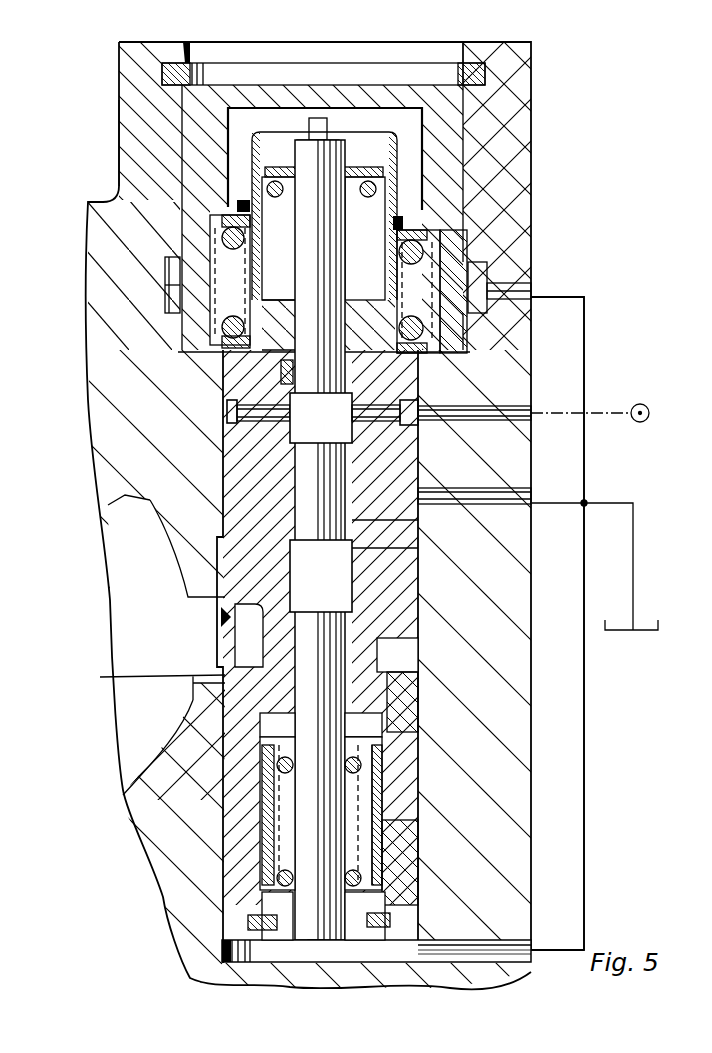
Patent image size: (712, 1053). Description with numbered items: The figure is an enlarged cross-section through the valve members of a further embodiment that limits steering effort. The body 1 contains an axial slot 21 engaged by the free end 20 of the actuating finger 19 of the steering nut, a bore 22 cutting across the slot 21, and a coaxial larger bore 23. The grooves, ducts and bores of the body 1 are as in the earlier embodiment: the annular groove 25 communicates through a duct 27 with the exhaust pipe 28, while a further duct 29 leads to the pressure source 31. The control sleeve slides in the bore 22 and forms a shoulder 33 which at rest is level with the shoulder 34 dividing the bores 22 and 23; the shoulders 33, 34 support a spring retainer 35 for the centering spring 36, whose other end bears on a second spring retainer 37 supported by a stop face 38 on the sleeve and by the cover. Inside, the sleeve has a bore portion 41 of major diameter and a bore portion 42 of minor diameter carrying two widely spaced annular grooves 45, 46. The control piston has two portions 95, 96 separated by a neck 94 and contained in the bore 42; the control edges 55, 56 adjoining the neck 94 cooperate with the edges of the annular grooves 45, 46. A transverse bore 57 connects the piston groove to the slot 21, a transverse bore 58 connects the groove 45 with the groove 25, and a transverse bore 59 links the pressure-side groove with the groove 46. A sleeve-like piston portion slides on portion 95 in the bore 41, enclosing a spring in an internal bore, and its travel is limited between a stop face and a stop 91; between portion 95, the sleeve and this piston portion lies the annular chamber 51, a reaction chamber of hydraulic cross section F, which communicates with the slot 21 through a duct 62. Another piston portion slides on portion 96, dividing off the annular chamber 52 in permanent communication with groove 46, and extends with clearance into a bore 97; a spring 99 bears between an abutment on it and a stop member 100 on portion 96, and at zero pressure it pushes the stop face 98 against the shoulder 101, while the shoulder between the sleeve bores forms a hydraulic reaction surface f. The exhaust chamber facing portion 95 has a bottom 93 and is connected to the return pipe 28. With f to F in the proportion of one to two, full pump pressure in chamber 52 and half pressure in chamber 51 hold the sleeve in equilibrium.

The body 1 is at (193, 913).
The actuating finger 19 is at (162, 647).
The free end 20 is at (225, 642).
The axial slot 21 is at (193, 683).
The bore 22 is at (222, 838).
The larger bore 23 is at (525, 72).
The annular groove 25 is at (240, 495).
The duct 27 is at (490, 500).
The exhaust pipe 28 is at (633, 503).
The duct 29 is at (483, 412).
The pressure source 31 is at (638, 403).
The shoulder 33 is at (262, 372).
The shoulder 34 is at (172, 318).
The spring retainer 35 is at (168, 258).
The centering spring 36 is at (232, 213).
The spring retainer 37 is at (122, 46).
The stop face 38 is at (184, 48).
The bore portion of major diameter 41 is at (385, 871).
The bore portion of minor diameter 42 is at (395, 632).
The annular groove 45 is at (222, 596).
The annular groove 46 is at (295, 437).
The annular chamber 51 is at (380, 742).
The annular chamber 52 is at (450, 272).
The control edge 55 is at (321, 576).
The control edge 56 is at (321, 418).
The transverse bore 57 is at (245, 537).
The transverse bore 58 is at (405, 548).
The transverse bore 59 is at (418, 410).
The duct 62 is at (455, 676).
The stop 91 is at (520, 968).
The bottom of chamber 93 is at (393, 967).
The neck 94 is at (405, 520).
The control piston portion 95 is at (320, 735).
The control piston portion 96 is at (320, 547).
The bore 97 is at (468, 118).
The stop face 98 is at (428, 225).
The spring 99 is at (385, 170).
The stop member 100 is at (282, 167).
The shoulder 101 is at (119, 141).
The hydraulic reaction surface f is at (230, 407).
The hydraulic cross section F is at (245, 838).